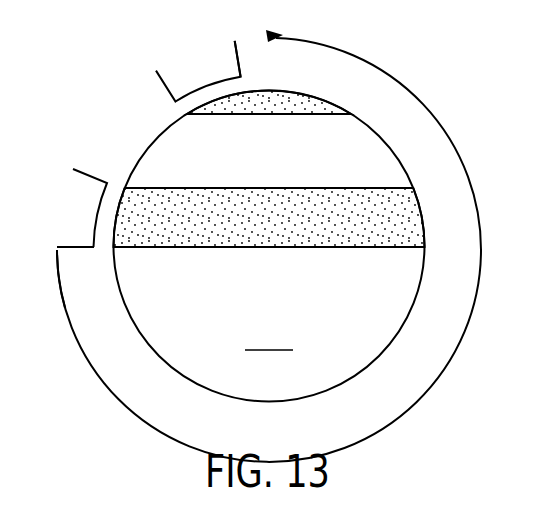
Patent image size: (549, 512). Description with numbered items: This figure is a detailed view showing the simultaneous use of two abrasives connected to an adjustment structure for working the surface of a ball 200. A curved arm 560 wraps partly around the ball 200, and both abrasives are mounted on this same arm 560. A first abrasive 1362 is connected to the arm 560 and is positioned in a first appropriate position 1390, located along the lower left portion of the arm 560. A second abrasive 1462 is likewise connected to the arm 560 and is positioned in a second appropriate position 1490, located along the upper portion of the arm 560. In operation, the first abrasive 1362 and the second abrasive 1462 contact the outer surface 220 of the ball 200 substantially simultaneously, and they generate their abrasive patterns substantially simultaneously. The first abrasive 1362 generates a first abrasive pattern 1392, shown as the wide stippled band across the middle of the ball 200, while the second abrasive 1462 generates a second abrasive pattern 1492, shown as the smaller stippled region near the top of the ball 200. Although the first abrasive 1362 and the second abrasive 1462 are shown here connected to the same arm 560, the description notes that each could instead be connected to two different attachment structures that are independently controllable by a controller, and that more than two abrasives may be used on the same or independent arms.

The ball 200 is at (410, 346).
The outer surface 220 is at (269, 337).
The arm 560 is at (112, 108).
The first abrasive 1362 is at (73, 248).
The first appropriate position 1390 is at (93, 268).
The first abrasive pattern 1392 is at (192, 253).
The second abrasive 1462 is at (239, 49).
The second appropriate position 1490 is at (255, 67).
The second abrasive pattern 1492 is at (301, 120).